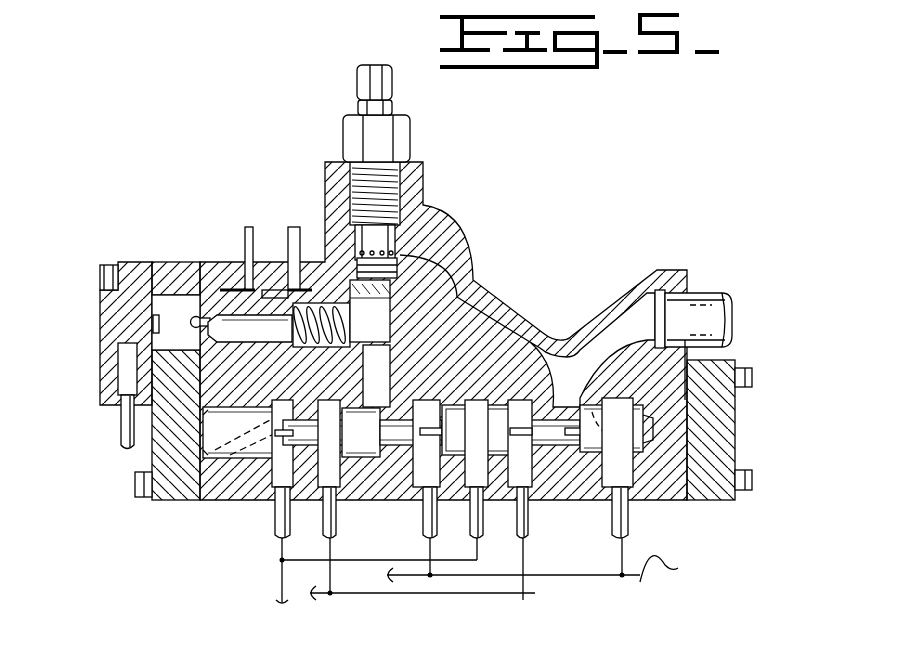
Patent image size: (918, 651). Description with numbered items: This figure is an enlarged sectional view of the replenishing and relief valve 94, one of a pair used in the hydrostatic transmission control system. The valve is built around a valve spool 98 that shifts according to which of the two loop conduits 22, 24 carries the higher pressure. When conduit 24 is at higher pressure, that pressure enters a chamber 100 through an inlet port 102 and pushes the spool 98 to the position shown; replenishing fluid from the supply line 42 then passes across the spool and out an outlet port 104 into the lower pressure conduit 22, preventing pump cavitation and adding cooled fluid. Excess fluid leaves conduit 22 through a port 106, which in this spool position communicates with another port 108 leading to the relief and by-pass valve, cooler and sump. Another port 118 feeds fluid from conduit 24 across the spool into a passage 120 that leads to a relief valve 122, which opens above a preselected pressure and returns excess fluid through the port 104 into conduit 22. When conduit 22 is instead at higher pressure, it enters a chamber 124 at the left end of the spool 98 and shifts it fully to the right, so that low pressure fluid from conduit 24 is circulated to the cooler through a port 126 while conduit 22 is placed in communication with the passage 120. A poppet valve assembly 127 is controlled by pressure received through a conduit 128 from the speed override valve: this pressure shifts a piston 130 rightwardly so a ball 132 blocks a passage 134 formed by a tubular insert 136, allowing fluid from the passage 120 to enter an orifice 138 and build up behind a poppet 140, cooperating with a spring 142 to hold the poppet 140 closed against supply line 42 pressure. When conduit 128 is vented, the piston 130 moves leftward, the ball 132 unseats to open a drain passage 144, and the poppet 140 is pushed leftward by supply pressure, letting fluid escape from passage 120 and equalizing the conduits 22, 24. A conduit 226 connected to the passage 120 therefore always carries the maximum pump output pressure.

The replenishing and relief valve 94 is at (490, 246).
The poppet 140 is at (476, 291).
The piston 130 is at (168, 310).
The conduit 128 is at (127, 432).
The ball 132 is at (168, 310).
The poppet valve assembly 127 is at (238, 282).
The passage 134 is at (240, 340).
The tubular insert 136 is at (288, 348).
The orifice 138 is at (392, 345).
The passage 120 is at (384, 379).
The relief valve 122 is at (402, 254).
The drain passage 144 is at (246, 228).
The conduit 226 is at (304, 257).
The spring 142 is at (278, 299).
The supply line 42 is at (692, 315).
The chamber 100 is at (673, 433).
The chamber 124 is at (199, 452).
The port 108 is at (278, 478).
The port 106 is at (333, 475).
The port 118 is at (433, 473).
The valve spool 98 is at (497, 447).
The port 126 is at (477, 477).
The outlet port 104 is at (523, 473).
The inlet port 102 is at (622, 475).
The conduit 22 is at (355, 593).
The conduit 24 is at (552, 563).